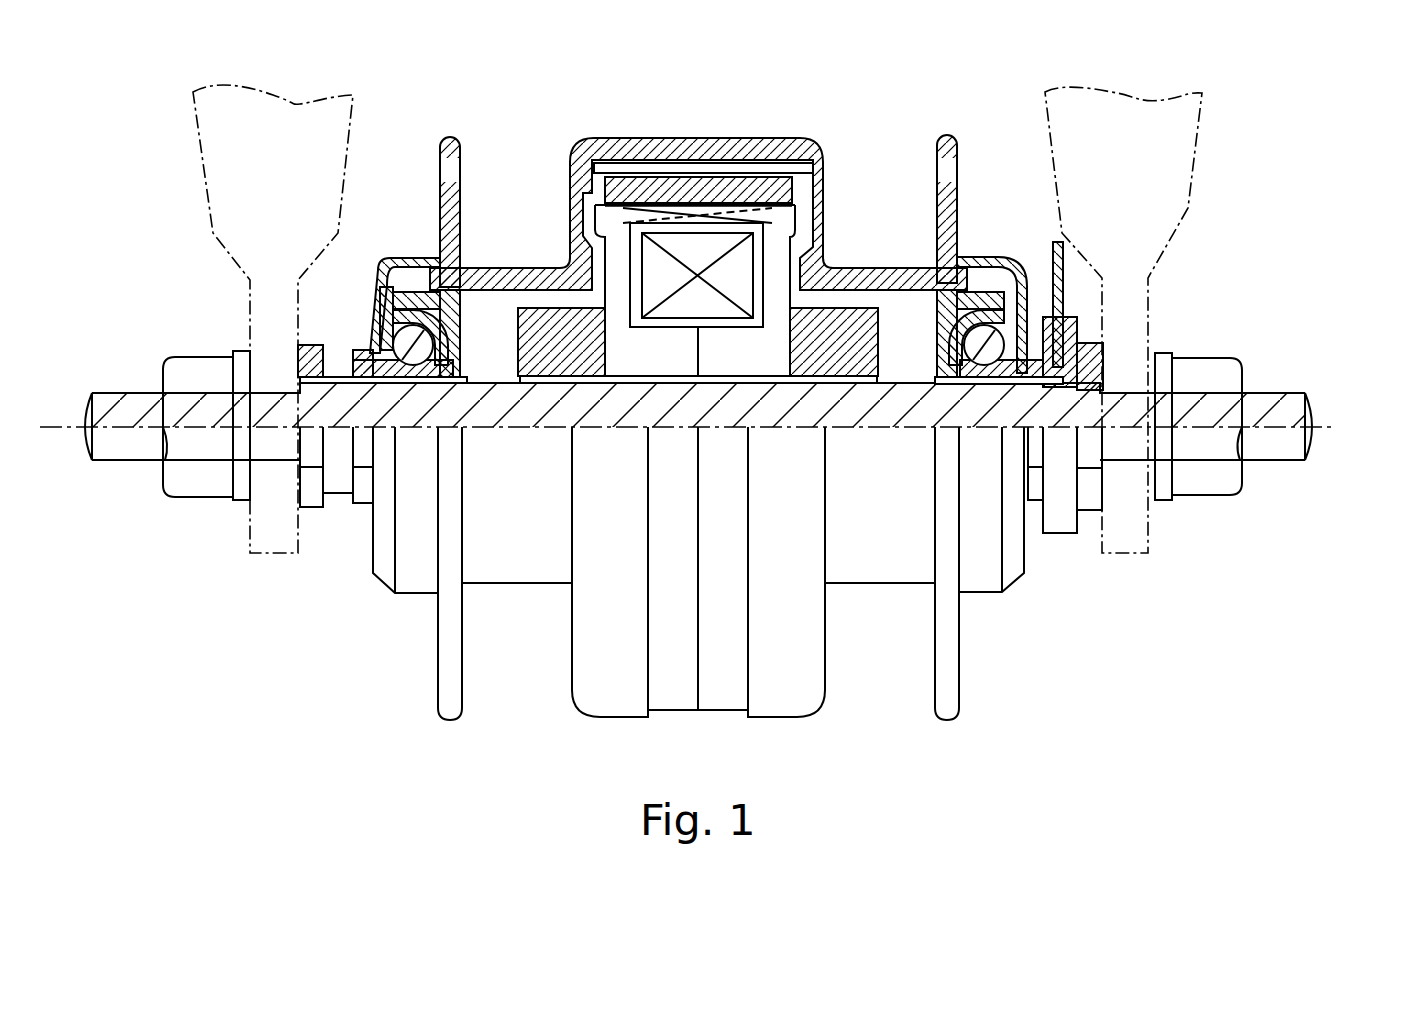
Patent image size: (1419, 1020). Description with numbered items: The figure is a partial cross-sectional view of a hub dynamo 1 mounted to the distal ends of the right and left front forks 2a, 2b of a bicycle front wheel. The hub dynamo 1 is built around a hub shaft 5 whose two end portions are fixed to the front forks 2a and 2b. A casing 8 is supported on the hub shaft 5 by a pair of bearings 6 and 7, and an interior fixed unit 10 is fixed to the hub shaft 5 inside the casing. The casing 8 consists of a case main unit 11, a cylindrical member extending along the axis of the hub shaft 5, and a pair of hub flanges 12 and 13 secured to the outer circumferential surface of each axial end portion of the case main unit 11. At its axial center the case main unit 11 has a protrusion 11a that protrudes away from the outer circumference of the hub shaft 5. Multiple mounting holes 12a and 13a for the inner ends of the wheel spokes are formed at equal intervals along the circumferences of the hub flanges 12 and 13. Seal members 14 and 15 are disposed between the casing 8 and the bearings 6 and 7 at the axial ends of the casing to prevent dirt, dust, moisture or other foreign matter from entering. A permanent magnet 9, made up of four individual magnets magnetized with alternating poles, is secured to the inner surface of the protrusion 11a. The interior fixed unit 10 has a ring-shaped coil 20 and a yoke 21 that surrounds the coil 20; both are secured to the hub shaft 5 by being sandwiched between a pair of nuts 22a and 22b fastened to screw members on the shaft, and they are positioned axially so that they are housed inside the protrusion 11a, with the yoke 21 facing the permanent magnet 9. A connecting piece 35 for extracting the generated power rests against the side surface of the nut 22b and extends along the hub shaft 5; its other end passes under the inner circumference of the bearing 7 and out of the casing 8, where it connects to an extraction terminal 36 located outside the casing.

The hub dynamo 1 is at (383, 650).
The front fork 2a is at (223, 153).
The front fork 2b is at (1172, 150).
The hub shaft 5 is at (1305, 405).
The bearing 6 is at (403, 343).
The bearing 7 is at (948, 320).
The casing 8 is at (787, 150).
The permanent magnet 9 is at (630, 193).
The interior fixed unit 10 is at (590, 307).
The case main unit 11 is at (810, 175).
The protrusion 11a is at (680, 142).
The hub flange 12 is at (450, 135).
The mounting hole 12a is at (440, 177).
The hub flange 13 is at (955, 133).
The mounting hole 13a is at (960, 167).
The seal member 14 is at (380, 293).
The seal member 15 is at (995, 260).
The coil 20 is at (713, 300).
The yoke 21 is at (650, 343).
The nut 22a is at (540, 360).
The nut 22b is at (838, 355).
The connecting piece 35 is at (958, 393).
The extraction terminal 36 is at (1055, 280).